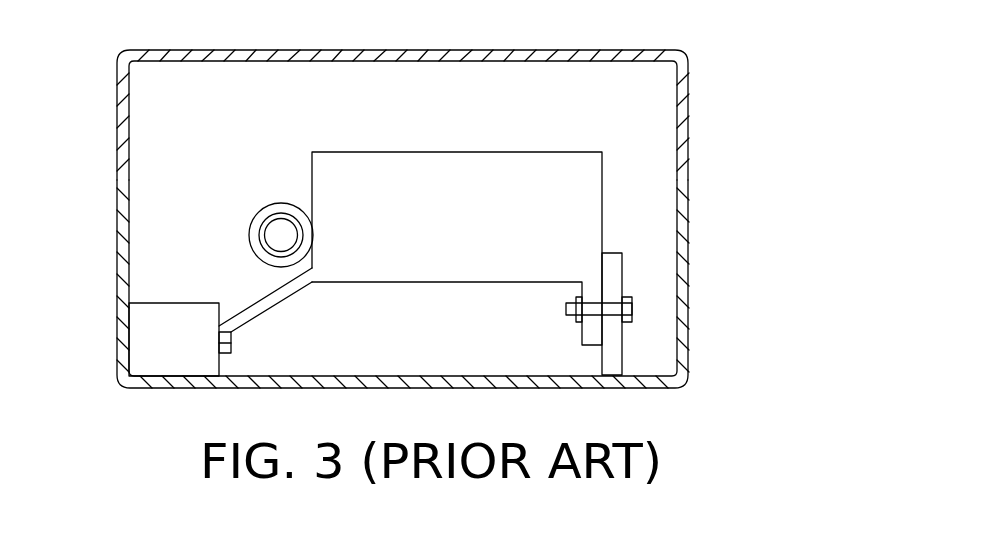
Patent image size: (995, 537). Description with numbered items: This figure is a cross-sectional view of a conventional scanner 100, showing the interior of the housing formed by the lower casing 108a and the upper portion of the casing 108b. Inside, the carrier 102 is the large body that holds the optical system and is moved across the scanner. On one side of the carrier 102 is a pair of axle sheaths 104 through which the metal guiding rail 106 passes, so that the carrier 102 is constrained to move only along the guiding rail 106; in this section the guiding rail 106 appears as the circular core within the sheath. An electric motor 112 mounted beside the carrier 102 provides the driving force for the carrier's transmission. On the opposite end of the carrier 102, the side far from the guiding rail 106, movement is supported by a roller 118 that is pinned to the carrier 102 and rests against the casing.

The scanner 100 is at (795, 60).
The carrier 102 is at (392, 177).
The axle sheaths 104 is at (250, 235).
The guiding rail 106 is at (282, 230).
The lower casing 108a is at (680, 202).
The upper portion of the casing 108b is at (680, 85).
The electric motor 112 is at (148, 332).
The roller 118 is at (610, 282).